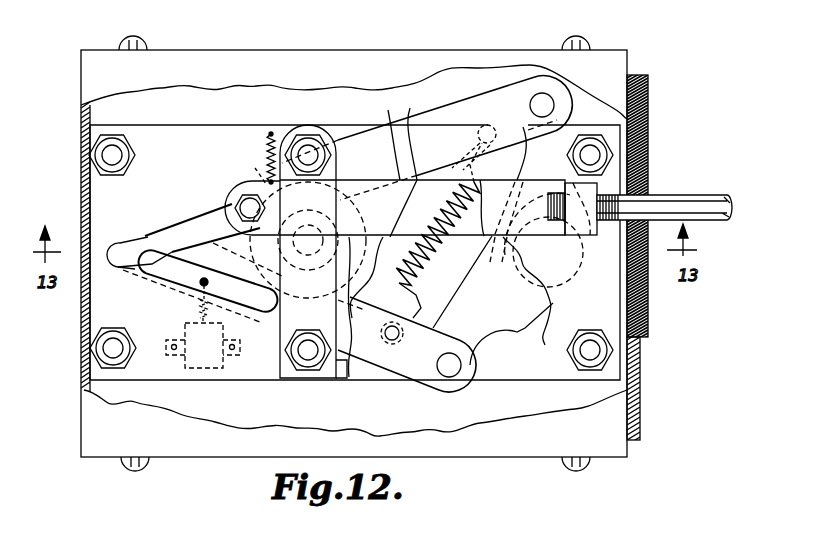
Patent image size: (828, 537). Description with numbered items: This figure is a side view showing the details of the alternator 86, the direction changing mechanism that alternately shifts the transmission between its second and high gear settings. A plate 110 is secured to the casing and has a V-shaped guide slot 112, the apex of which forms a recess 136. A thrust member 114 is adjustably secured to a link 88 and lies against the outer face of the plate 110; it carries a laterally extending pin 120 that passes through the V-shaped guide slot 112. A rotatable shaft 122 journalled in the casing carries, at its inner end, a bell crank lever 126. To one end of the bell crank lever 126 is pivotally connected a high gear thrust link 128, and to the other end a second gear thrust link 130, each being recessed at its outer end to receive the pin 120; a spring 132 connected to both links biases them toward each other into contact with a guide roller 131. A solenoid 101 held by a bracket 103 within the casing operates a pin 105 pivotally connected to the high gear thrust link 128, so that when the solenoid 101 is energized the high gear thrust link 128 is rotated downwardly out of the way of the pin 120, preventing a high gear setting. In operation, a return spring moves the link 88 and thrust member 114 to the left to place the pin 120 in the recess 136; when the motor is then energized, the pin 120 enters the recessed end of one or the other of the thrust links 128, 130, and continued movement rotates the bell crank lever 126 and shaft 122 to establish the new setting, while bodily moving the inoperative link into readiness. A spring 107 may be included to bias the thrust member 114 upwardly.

The alternator 86 is at (478, 46).
The link 88 is at (676, 197).
The solenoid 101 is at (240, 361).
The bracket 103 is at (177, 352).
The pin 105 is at (210, 284).
The spring 107 is at (270, 148).
The plate 110 is at (224, 379).
The V-shaped guide slot 112 is at (146, 237).
The thrust member 114 is at (398, 136).
The pin 120 is at (266, 170).
The rotatable shaft 122 is at (553, 294).
The bell crank lever 126 is at (490, 350).
The high gear thrust link 128 is at (440, 387).
The second gear thrust link 130 is at (426, 90).
The guide roller 131 is at (360, 290).
The spring 132 is at (463, 250).
The recess 136 is at (114, 266).